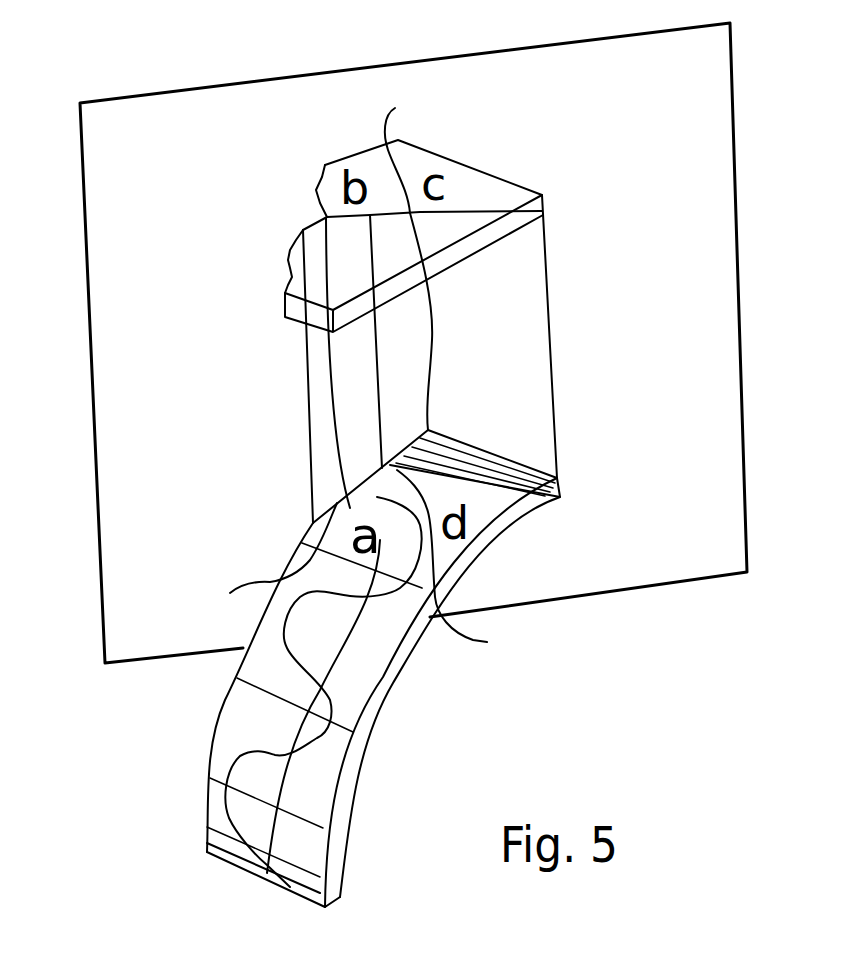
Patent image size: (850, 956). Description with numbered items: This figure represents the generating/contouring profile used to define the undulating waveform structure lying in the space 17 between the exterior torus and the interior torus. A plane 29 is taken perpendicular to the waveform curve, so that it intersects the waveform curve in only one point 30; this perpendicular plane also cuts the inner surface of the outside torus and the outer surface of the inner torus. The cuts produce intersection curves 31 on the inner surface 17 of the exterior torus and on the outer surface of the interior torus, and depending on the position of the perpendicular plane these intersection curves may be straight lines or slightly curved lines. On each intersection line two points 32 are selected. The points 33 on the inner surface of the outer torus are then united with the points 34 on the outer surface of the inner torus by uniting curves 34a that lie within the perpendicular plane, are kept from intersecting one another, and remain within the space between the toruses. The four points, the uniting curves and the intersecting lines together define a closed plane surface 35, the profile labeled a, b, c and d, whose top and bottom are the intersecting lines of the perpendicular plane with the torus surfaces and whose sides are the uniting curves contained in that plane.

The inner surface of the exterior torus 17 is at (503, 230).
The plane 29 is at (700, 452).
The point 30 is at (377, 497).
The intersection curves 31 is at (465, 212).
The points 32 is at (165, 747).
The points from the inner surface of the outer torus 33 is at (410, 207).
The points from the outer surface of the inner torus 34 is at (440, 480).
The uniting curves 34a is at (500, 313).
The closed plane surface 35 is at (361, 384).